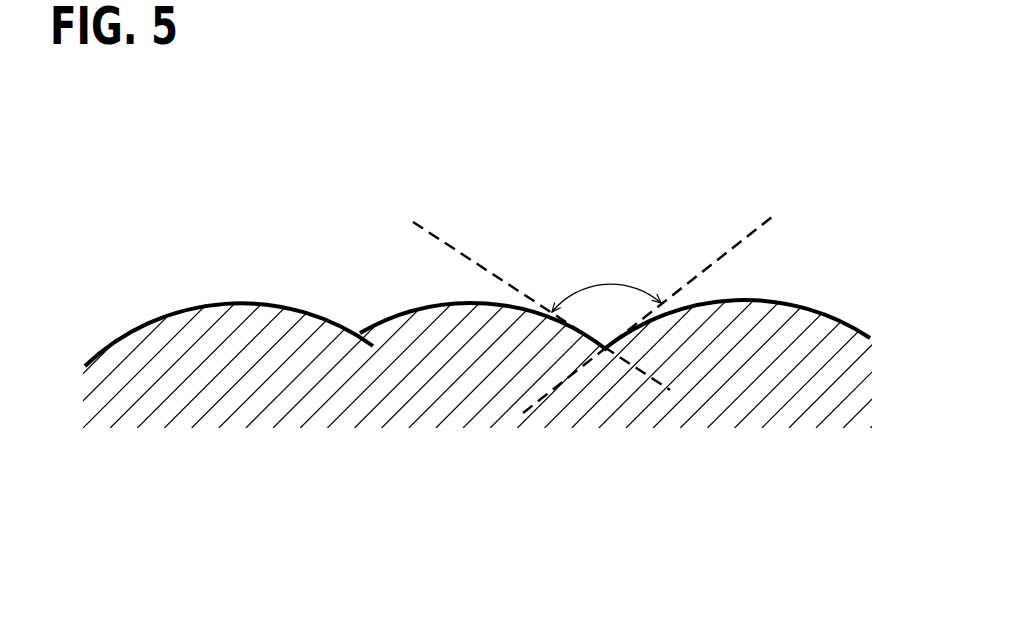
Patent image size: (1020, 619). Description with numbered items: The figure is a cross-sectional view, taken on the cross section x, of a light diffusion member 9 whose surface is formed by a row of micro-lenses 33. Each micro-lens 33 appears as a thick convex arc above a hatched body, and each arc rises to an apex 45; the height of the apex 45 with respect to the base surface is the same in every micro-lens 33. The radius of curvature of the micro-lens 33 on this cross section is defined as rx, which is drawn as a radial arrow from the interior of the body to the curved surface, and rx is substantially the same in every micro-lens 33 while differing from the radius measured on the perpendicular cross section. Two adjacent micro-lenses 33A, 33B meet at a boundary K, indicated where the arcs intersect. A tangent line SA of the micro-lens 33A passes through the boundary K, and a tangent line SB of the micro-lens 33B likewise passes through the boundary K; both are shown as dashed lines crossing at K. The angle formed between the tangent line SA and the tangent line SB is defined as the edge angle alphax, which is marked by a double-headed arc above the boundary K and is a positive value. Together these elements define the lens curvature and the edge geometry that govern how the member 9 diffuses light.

The lens 9 is at (820, 150).
The micro-lens 33 is at (198, 330).
The micro-lens 33A is at (417, 328).
The micro-lens 33B is at (800, 323).
The apex 45 is at (223, 303).
The tangent line SA is at (468, 257).
The tangent line SB is at (730, 250).
The boundary K is at (605, 348).
The radius of curvature rx is at (152, 327).
The edge angle alphax is at (606, 281).